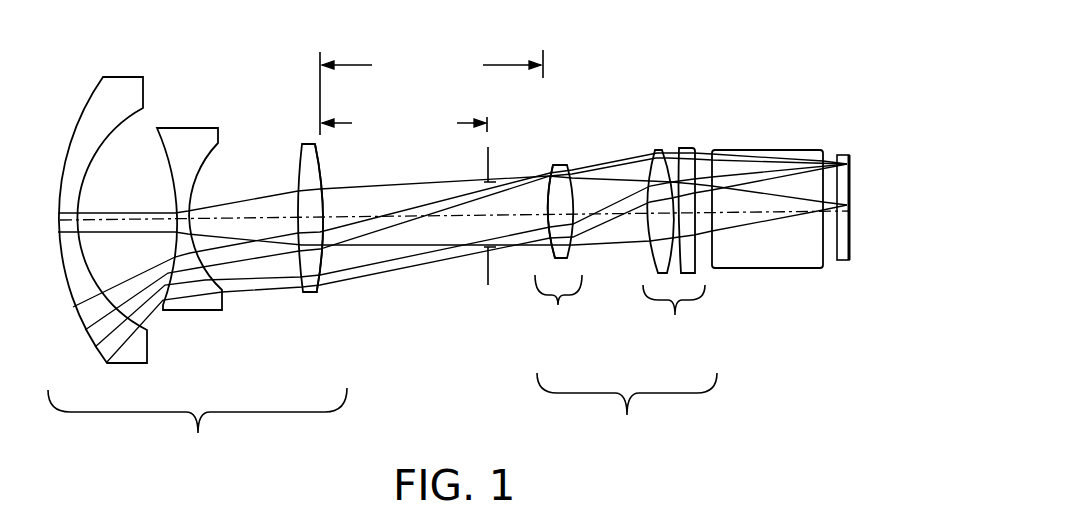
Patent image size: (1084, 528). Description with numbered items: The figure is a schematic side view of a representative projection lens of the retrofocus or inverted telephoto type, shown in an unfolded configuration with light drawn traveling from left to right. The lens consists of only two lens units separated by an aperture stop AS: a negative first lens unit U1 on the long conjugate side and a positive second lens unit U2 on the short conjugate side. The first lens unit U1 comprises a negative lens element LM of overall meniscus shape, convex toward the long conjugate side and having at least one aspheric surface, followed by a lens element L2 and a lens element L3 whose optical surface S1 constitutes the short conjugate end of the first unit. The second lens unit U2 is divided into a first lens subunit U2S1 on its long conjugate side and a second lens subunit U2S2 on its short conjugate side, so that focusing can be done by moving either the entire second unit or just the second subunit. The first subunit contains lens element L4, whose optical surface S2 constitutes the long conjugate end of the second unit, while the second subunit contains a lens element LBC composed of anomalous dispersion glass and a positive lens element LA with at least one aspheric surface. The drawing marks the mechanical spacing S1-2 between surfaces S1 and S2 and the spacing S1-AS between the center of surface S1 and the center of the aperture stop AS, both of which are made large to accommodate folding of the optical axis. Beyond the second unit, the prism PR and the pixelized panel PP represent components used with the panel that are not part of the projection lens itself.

The negative meniscus lens element LM is at (118, 100).
The lens element L2 is at (188, 153).
The lens element L3 is at (305, 168).
The optical surface S1 is at (323, 258).
The mechanical spacing S1-2 is at (431, 92).
The spacing S1-AS is at (404, 128).
The aperture stop AS is at (488, 279).
The optical surface S2 is at (530, 226).
The lens element L4 is at (550, 167).
The first lens subunit U2S1 is at (526, 250).
The lens element LBC is at (660, 148).
The positive aspheric lens element LA is at (683, 167).
The second lens subunit U2S2 is at (699, 209).
The prism PR is at (773, 250).
The pixelized panel PP is at (851, 235).
The first lens unit U1 is at (203, 254).
The second lens unit U2 is at (608, 256).